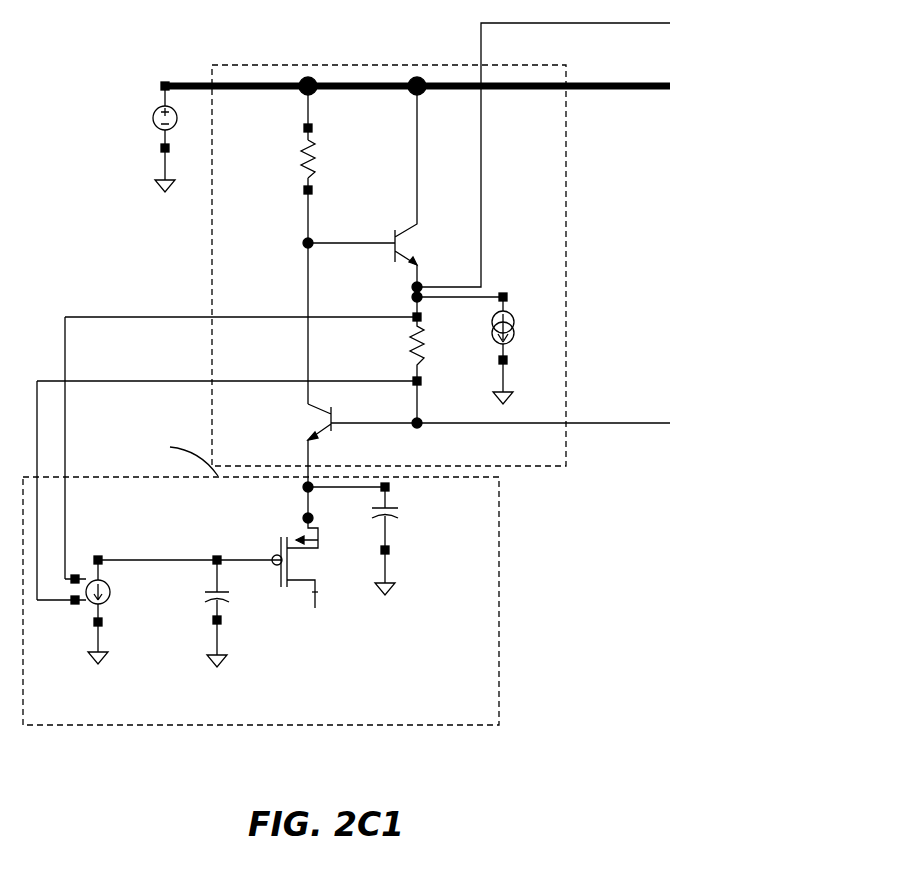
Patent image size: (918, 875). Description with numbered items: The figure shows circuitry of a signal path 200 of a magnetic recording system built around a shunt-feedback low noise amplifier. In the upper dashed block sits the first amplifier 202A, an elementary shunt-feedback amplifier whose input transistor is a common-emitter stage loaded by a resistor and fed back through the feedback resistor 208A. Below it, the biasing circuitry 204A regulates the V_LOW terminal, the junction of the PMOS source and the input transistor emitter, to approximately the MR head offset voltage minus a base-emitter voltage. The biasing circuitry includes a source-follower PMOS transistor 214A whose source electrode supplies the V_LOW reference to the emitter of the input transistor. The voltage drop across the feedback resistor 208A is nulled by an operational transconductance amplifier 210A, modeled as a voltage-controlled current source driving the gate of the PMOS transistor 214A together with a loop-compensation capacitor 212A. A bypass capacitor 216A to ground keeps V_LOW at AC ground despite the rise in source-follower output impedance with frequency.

The signal path 200 is at (133, 58).
The first amplifier 202A is at (297, 63).
The biasing circuitry 204A is at (500, 513).
The feedback resistor 208A is at (400, 362).
The operational transconductance amplifier 210A is at (112, 593).
The loop-compensation capacitor 212A is at (230, 607).
The PMOS transistor 214A is at (330, 560).
The bypass capacitor 216A is at (392, 520).